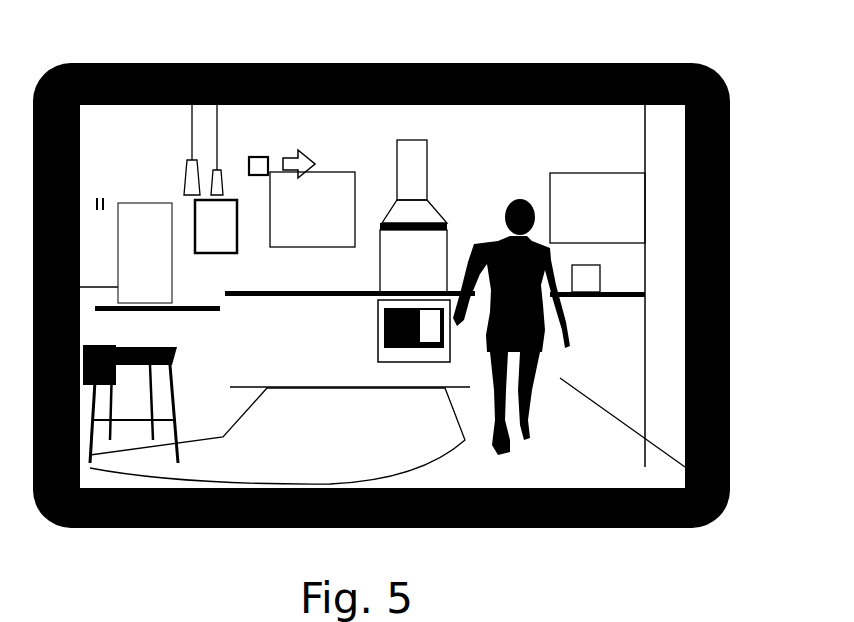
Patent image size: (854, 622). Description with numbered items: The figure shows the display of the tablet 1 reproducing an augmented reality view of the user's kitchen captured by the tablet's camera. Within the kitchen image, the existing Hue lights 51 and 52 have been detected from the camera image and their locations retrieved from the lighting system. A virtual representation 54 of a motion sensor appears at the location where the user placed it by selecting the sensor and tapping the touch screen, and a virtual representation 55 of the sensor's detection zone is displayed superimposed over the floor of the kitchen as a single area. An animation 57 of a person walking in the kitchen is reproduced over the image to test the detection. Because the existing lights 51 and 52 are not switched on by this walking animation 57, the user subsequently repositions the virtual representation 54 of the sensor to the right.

The tablet 1 is at (562, 65).
The light 51 is at (191, 187).
The light 52 is at (222, 203).
The virtual representation of a sensor 54 is at (253, 157).
The virtual representation of the detection zone 55 is at (277, 436).
The animation of a person 57 is at (518, 203).